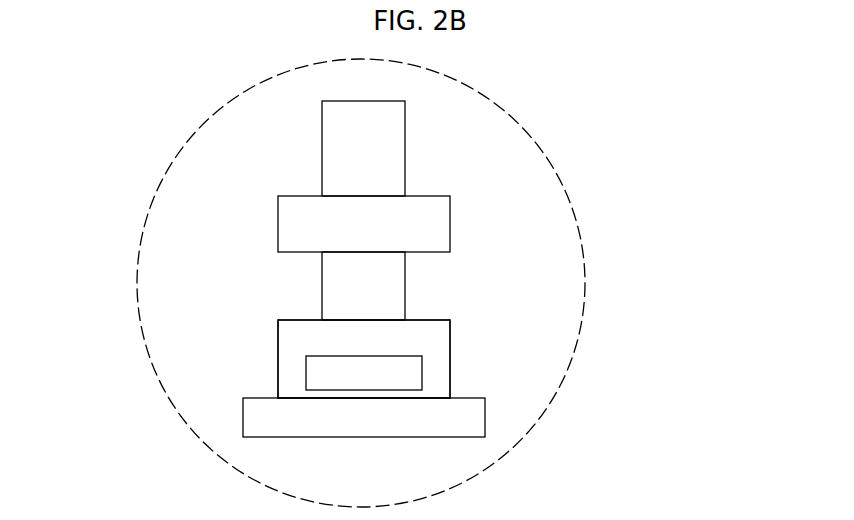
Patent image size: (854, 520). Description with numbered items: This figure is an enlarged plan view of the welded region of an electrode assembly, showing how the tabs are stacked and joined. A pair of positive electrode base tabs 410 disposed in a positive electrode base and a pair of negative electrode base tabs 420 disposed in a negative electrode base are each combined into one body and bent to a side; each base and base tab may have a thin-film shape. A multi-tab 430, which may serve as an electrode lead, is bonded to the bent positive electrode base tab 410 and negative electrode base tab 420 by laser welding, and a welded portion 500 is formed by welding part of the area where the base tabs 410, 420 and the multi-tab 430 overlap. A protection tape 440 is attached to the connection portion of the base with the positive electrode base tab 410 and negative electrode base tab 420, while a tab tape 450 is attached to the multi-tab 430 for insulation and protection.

The multi-tab 430 is at (412, 142).
The tab tape 450 is at (455, 220).
The positive electrode base tab 410 is at (455, 333).
The negative electrode base tab 420 is at (364, 359).
The welded portion 500 is at (425, 369).
The protection tape 440 is at (487, 418).